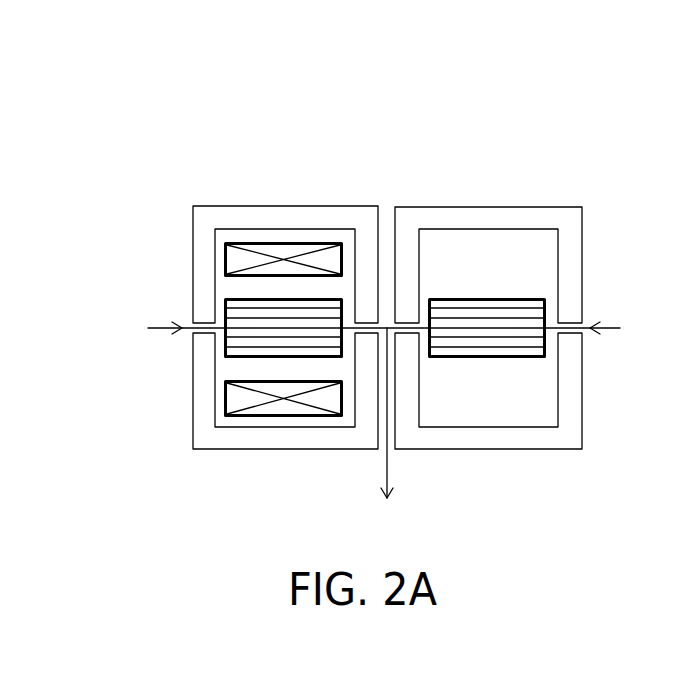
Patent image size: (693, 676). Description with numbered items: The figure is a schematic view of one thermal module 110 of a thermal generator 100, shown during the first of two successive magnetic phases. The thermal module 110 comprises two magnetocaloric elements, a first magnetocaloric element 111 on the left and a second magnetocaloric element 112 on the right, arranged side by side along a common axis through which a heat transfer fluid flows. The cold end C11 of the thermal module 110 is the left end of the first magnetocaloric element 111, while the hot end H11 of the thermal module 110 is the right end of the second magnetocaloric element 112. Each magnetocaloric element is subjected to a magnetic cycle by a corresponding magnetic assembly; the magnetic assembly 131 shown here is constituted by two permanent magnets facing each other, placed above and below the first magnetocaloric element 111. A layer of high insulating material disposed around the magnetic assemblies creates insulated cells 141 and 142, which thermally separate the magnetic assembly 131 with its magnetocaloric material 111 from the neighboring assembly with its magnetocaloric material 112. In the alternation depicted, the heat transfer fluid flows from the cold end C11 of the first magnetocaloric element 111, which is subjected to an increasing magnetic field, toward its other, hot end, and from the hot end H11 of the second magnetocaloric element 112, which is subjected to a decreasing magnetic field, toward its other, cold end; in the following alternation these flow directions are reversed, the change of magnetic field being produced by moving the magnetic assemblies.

The thermal generator 100 is at (543, 78).
The thermal module 110 is at (367, 188).
The first magnetocaloric element 111 is at (245, 408).
The second magnetocaloric element 112 is at (508, 340).
The magnetic assembly 131 is at (285, 398).
The insulated cell 141 is at (306, 443).
The insulated cell 142 is at (445, 443).
The cold end C11 is at (224, 315).
The hot end H11 is at (548, 316).